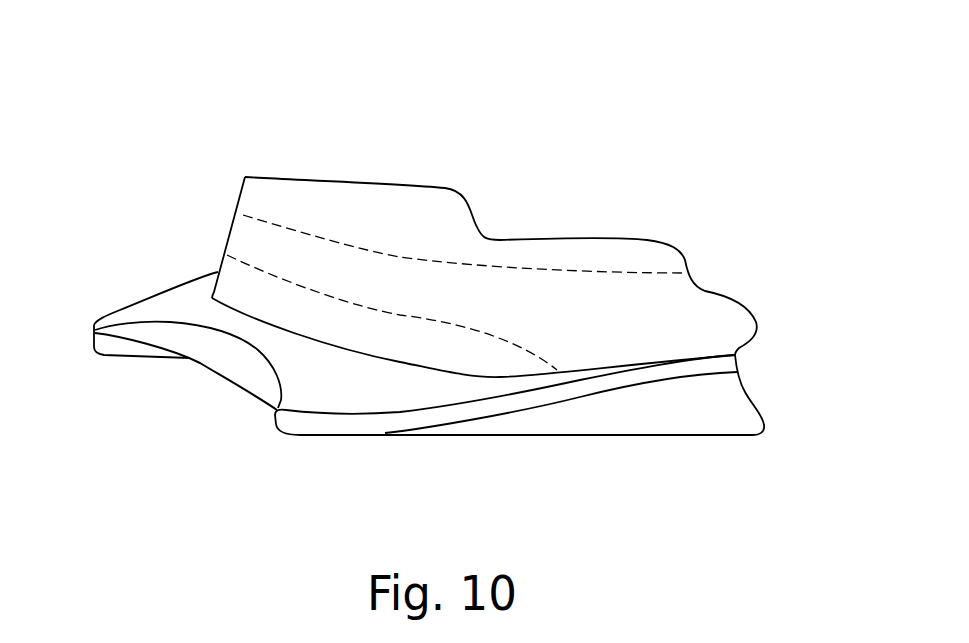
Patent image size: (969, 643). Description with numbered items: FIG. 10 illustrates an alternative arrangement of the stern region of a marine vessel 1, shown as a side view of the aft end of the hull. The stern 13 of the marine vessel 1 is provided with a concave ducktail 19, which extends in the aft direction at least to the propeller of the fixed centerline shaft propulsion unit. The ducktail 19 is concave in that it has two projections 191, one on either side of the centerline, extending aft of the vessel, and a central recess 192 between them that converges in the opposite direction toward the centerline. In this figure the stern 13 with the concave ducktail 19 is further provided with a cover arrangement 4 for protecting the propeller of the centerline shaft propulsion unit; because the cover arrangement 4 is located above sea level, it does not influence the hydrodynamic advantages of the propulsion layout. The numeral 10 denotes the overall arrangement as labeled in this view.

The shoe 10 is at (329, 150).
The marine vessel 1 is at (578, 203).
The stern 13 is at (249, 228).
The concave ducktail 19 is at (188, 306).
The projections 191 is at (93, 367).
The central recess 192 is at (220, 389).
The cover arrangement 4 is at (252, 372).